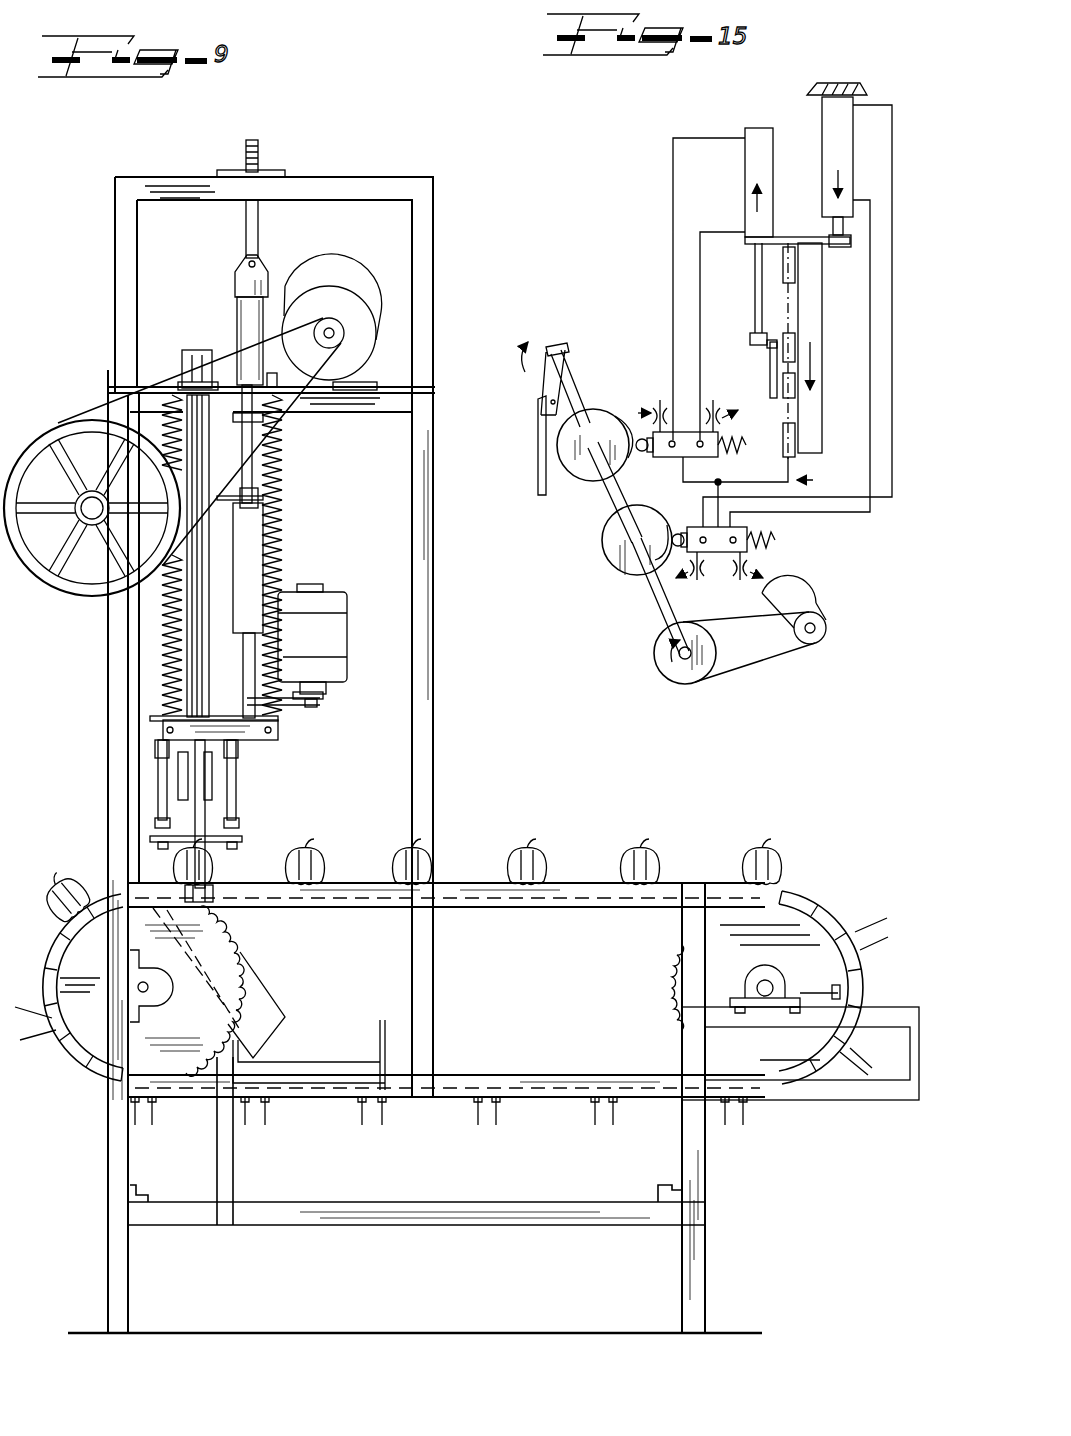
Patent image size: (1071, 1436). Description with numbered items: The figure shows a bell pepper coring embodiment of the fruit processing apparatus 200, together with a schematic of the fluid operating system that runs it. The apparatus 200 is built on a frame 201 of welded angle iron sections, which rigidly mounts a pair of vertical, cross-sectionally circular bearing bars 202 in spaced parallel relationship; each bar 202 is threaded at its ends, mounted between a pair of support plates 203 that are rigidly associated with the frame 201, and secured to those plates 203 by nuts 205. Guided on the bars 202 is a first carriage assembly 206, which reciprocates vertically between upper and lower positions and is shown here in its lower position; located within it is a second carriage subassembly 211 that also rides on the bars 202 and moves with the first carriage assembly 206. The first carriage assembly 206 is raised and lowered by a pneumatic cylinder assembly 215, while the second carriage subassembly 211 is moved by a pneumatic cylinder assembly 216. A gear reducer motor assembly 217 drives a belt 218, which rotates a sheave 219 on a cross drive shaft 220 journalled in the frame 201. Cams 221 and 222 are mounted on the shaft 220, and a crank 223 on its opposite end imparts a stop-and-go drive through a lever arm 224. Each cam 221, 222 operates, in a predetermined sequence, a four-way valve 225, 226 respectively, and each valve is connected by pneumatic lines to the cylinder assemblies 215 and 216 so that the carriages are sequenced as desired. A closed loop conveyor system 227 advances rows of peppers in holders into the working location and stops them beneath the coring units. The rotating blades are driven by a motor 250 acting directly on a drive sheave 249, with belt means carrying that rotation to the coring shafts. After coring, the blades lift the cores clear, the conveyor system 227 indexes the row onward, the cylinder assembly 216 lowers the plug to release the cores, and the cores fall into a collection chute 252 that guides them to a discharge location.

In FIG. 9, the fruit processing apparatus 200 is at (375, 178).
In FIG. 9, the frame 201 is at (104, 1137).
In FIG. 9, the bearing bars 202 is at (205, 801).
In FIG. 9, the support plates 203 is at (178, 378).
In FIG. 9, the nuts 205 is at (200, 378).
In FIG. 9, the first carriage assembly 206 is at (337, 495).
In FIG. 15, the first carriage assembly 206 is at (816, 318).
In FIG. 15, the second carriage subassembly 211 is at (778, 366).
In FIG. 9, the pneumatic cylinder assembly 215 is at (250, 290).
In FIG. 15, the pneumatic cylinder assembly 215 is at (827, 119).
In FIG. 15, the pneumatic cylinder assembly 216 is at (749, 186).
In FIG. 9, the gear reducer motor assembly 217 is at (385, 249).
In FIG. 15, the gear reducer motor assembly 217 is at (808, 597).
In FIG. 9, the belt 218 is at (112, 395).
In FIG. 15, the belt 218 is at (752, 665).
In FIG. 9, the sheave 219 is at (52, 438).
In FIG. 15, the sheave 219 is at (668, 668).
In FIG. 9, the cross drive shaft 220 is at (88, 512).
In FIG. 15, the cross drive shaft 220 is at (657, 597).
In FIG. 15, the cam 221 is at (633, 572).
In FIG. 15, the cam 222 is at (585, 482).
In FIG. 15, the crank 223 is at (560, 345).
In FIG. 15, the lever arm 224 is at (548, 455).
In FIG. 15, the four-way valve 225 is at (755, 545).
In FIG. 15, the four-way valve 226 is at (688, 445).
In FIG. 9, the conveyor system 227 is at (565, 882).
In FIG. 9, the drive sheave 249 is at (316, 694).
In FIG. 9, the motor 250 is at (332, 637).
In FIG. 9, the collection chute 252 is at (260, 1000).